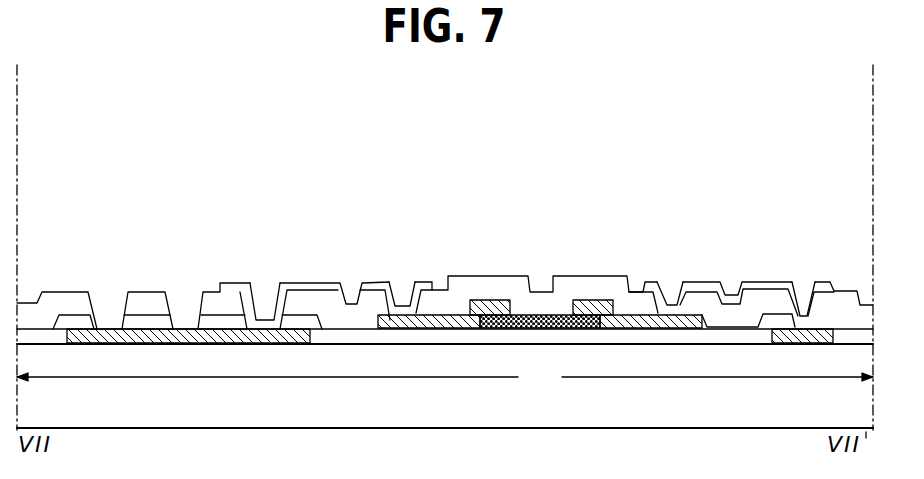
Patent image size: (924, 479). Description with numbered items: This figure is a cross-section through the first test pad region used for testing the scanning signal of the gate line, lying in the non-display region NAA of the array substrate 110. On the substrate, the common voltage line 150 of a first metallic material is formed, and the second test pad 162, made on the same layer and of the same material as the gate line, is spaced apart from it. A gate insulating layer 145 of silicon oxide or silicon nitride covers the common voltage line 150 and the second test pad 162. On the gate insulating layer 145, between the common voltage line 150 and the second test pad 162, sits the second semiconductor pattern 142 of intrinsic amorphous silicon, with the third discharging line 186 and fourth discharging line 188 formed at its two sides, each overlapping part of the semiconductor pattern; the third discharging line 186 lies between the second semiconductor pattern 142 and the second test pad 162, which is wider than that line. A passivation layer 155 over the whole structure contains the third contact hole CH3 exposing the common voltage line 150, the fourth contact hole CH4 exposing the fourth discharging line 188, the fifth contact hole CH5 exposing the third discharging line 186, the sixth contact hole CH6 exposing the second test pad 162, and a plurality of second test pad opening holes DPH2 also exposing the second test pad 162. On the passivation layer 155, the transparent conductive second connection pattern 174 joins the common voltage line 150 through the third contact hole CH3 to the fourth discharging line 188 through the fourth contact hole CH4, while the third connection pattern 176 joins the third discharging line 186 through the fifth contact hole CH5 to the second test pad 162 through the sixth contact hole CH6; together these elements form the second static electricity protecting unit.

The array substrate 110 is at (840, 413).
The second test pad 162 is at (162, 345).
The common voltage line 150 is at (786, 345).
The second test pad opening holes DPH2 is at (106, 280).
The passivation layer 155 is at (596, 275).
The sixth contact hole CH6 is at (270, 280).
The fifth contact hole CH5 is at (403, 280).
The fourth contact hole CH4 is at (676, 280).
The third contact hole CH3 is at (802, 280).
The third connection pattern 176 is at (323, 281).
The second connection pattern 174 is at (764, 281).
The third discharging line 186 is at (490, 299).
The fourth discharging line 188 is at (636, 292).
The second semiconductor pattern 142 is at (546, 316).
The gate insulating layer 145 is at (743, 330).
The non-display region NAA is at (445, 377).